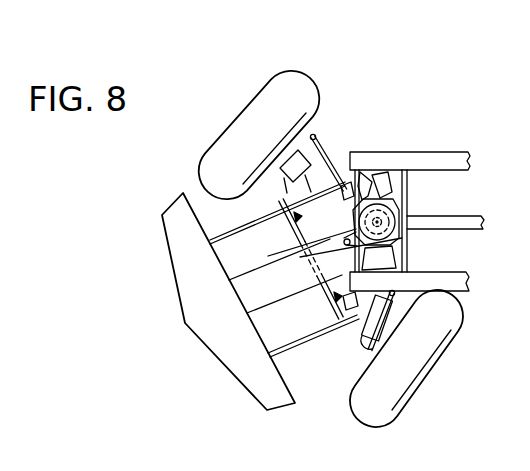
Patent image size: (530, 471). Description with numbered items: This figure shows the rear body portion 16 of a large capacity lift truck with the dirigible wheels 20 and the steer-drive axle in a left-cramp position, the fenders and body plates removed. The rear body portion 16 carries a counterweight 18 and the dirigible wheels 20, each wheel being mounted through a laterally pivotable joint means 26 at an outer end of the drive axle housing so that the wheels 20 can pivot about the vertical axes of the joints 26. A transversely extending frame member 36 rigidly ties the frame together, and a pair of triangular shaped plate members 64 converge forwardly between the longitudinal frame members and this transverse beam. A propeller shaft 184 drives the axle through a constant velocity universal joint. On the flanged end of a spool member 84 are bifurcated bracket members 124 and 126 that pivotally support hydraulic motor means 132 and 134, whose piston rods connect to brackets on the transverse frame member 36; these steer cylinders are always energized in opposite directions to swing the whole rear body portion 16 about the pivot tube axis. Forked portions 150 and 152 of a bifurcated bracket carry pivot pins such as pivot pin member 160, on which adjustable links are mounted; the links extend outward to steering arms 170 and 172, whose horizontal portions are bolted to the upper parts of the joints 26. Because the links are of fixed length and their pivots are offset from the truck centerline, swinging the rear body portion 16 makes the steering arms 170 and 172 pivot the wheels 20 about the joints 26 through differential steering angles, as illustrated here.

The rear body portion 16 is at (218, 368).
The counterweight 18 is at (185, 277).
The dirigible wheels 20 is at (312, 84).
The joint means 26 is at (266, 168).
The transversely extending frame member 36 is at (290, 236).
The triangular shaped plate members 64 is at (322, 152).
The spool member 84 is at (414, 206).
The bifurcated bracket member 124 is at (403, 253).
The bifurcated bracket member 126 is at (400, 191).
The hydraulic motor means 132 is at (332, 316).
The hydraulic motor means 134 is at (362, 183).
The forked portion 150 is at (388, 164).
The forked portion 152 is at (412, 240).
The pivot pin member 160 is at (412, 291).
The steering arm 170 is at (386, 315).
The steering arm 172 is at (297, 156).
The propeller shaft 184 is at (474, 217).